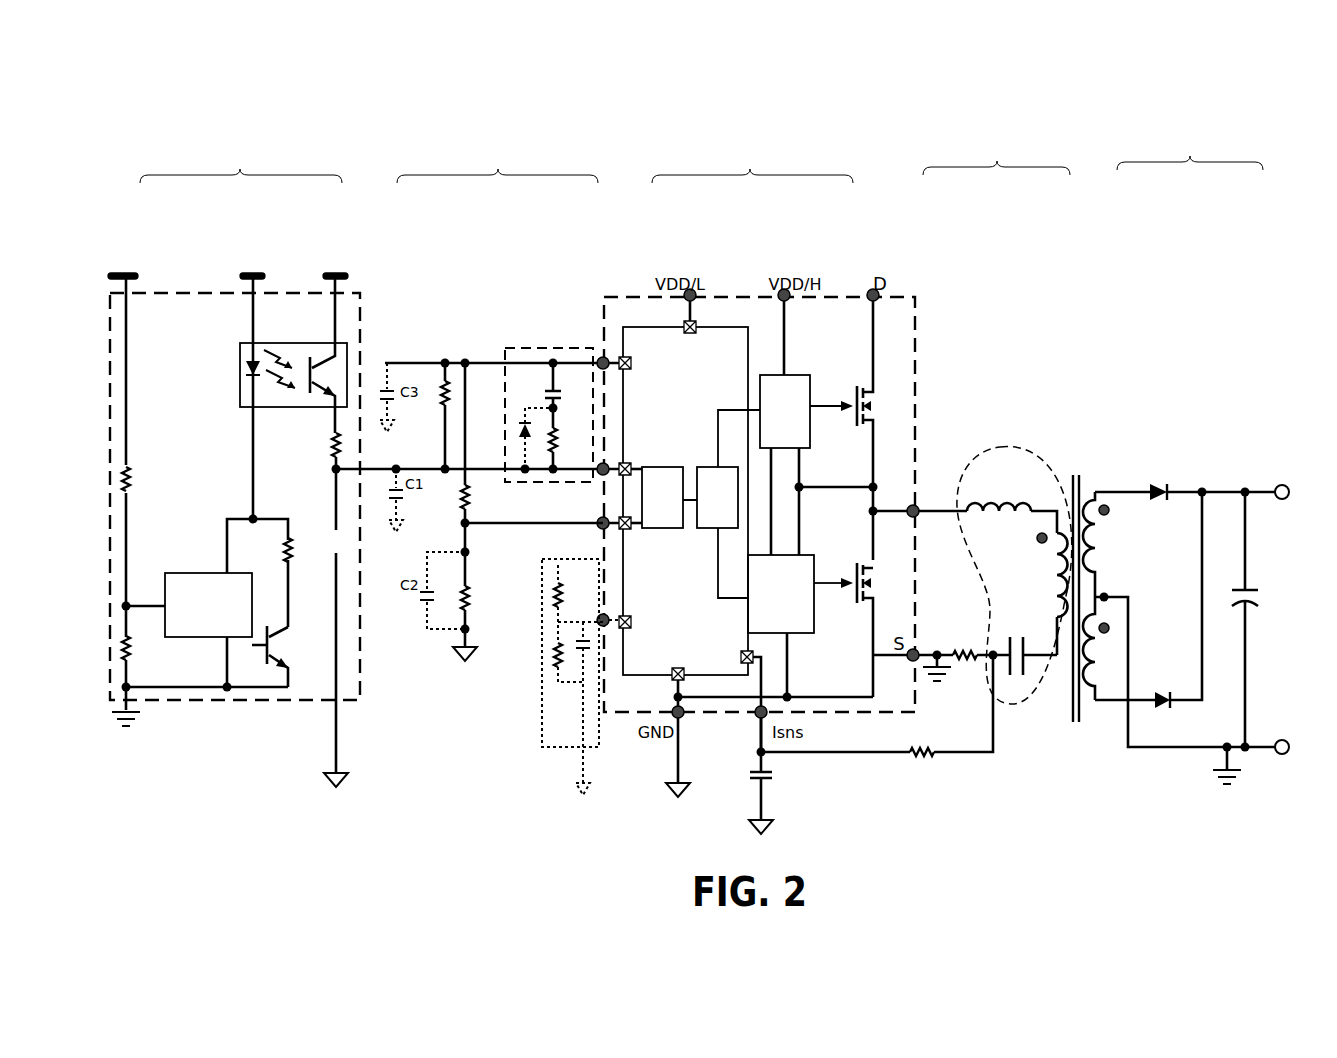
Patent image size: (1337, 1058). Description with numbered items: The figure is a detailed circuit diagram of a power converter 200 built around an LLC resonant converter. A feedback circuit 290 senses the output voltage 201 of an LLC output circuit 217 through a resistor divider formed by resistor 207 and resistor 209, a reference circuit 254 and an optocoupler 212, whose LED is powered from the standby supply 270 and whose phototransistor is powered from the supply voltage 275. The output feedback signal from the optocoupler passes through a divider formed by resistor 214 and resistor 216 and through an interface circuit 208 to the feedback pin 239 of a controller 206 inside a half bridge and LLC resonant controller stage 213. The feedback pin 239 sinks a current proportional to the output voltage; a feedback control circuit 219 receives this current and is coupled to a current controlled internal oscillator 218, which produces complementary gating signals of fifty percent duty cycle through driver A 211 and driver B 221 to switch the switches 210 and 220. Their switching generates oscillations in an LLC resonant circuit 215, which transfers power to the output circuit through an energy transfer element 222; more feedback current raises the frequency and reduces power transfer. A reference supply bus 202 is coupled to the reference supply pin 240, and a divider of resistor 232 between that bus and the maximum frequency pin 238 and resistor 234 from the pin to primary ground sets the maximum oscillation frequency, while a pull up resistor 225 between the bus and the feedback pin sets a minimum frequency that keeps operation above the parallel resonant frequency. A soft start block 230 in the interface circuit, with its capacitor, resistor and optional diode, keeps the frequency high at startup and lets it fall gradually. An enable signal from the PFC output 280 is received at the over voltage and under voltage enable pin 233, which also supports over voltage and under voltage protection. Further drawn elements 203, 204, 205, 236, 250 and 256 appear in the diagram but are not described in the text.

The power converter 200 is at (1285, 65).
The output voltage Vout 201 is at (150, 243).
The VDDREF bus 202 is at (468, 338).
The output rectifier diode 203 is at (1148, 482).
The output rectifier diode 204 is at (1155, 687).
The output capacitor Co 205 is at (1265, 602).
The controller 206 is at (713, 328).
The resistor Ro1 207 is at (137, 468).
The interface circuit 208 is at (530, 108).
The resistor Ro2 209 is at (136, 652).
The switch 210 is at (873, 570).
The driver A 211 is at (817, 627).
The optocoupler 212 is at (264, 340).
The half bridge & LLC resonant controller stage 213 is at (793, 103).
The resistor R1 214 is at (329, 456).
The LLC resonant circuit 215 is at (1033, 103).
The resistor R2 216 is at (331, 548).
The LLC output circuit 217 is at (1228, 120).
The internal oscillator 218 is at (714, 466).
The feedback control circuit 219 is at (667, 528).
The switch 220 is at (877, 398).
The driver B 221 is at (793, 367).
The energy transfer element T1 222 is at (1087, 473).
The pull up resistor RFMIN 225 is at (438, 394).
The soft start block 230 is at (517, 318).
The resistor RFMAX1 232 is at (460, 503).
The OV/UV (EN) pin 233 is at (632, 615).
The resistor RFMAX2 234 is at (470, 600).
The resistor 236 is at (924, 758).
The FMAX pin 238 is at (628, 545).
The feedback pin FBllc 239 is at (637, 445).
The VDDREF pin 240 is at (628, 378).
The half bridge node HB 250 is at (927, 480).
The reference circuit 254 is at (172, 569).
The resonant capacitor Cres 256 is at (1010, 637).
The Vstandby 270 is at (238, 243).
The Vcc 275 is at (323, 243).
The enable signal from PFC output 280 is at (538, 742).
The feedback circuit 290 is at (270, 110).